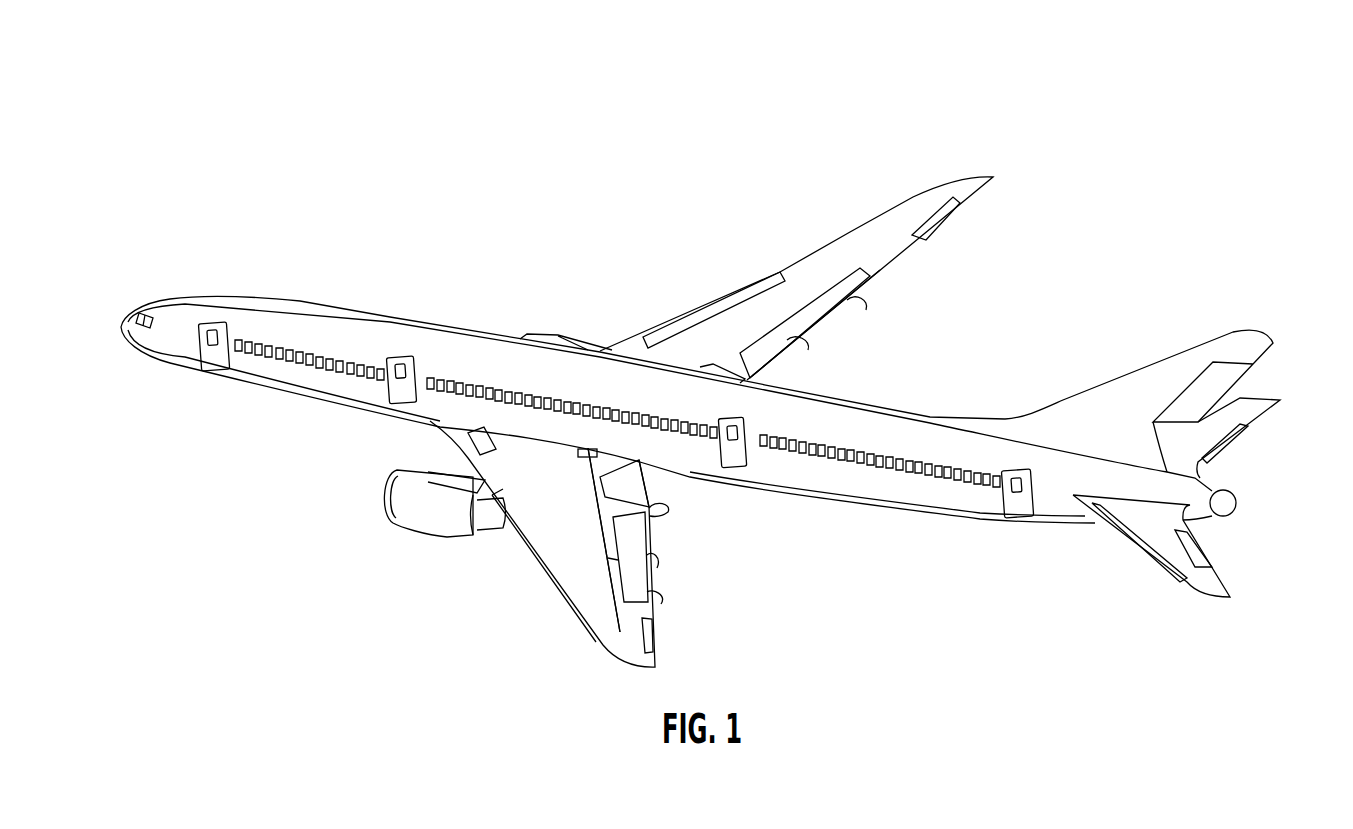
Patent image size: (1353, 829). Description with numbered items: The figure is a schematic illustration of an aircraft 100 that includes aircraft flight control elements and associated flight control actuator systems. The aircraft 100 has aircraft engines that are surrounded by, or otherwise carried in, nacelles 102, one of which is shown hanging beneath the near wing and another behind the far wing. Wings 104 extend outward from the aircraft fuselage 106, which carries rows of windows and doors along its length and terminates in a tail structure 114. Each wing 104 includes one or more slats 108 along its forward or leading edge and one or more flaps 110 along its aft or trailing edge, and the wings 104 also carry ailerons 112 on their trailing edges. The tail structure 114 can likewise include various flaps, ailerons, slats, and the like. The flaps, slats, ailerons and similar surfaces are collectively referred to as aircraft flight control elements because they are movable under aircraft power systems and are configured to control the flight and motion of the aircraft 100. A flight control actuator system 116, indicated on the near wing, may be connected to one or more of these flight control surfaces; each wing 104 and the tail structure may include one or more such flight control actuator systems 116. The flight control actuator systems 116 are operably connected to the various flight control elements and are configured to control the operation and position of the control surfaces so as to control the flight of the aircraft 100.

The aircraft 100 is at (1087, 175).
The nacelles 102 is at (547, 338).
The wings 104 is at (913, 197).
The aircraft fuselage 106 is at (285, 307).
The slats 108 is at (763, 283).
The flaps 110 is at (833, 317).
The ailerons 112 is at (957, 215).
The tail structure 114 is at (1130, 550).
The flight control actuator system 116 is at (587, 492).